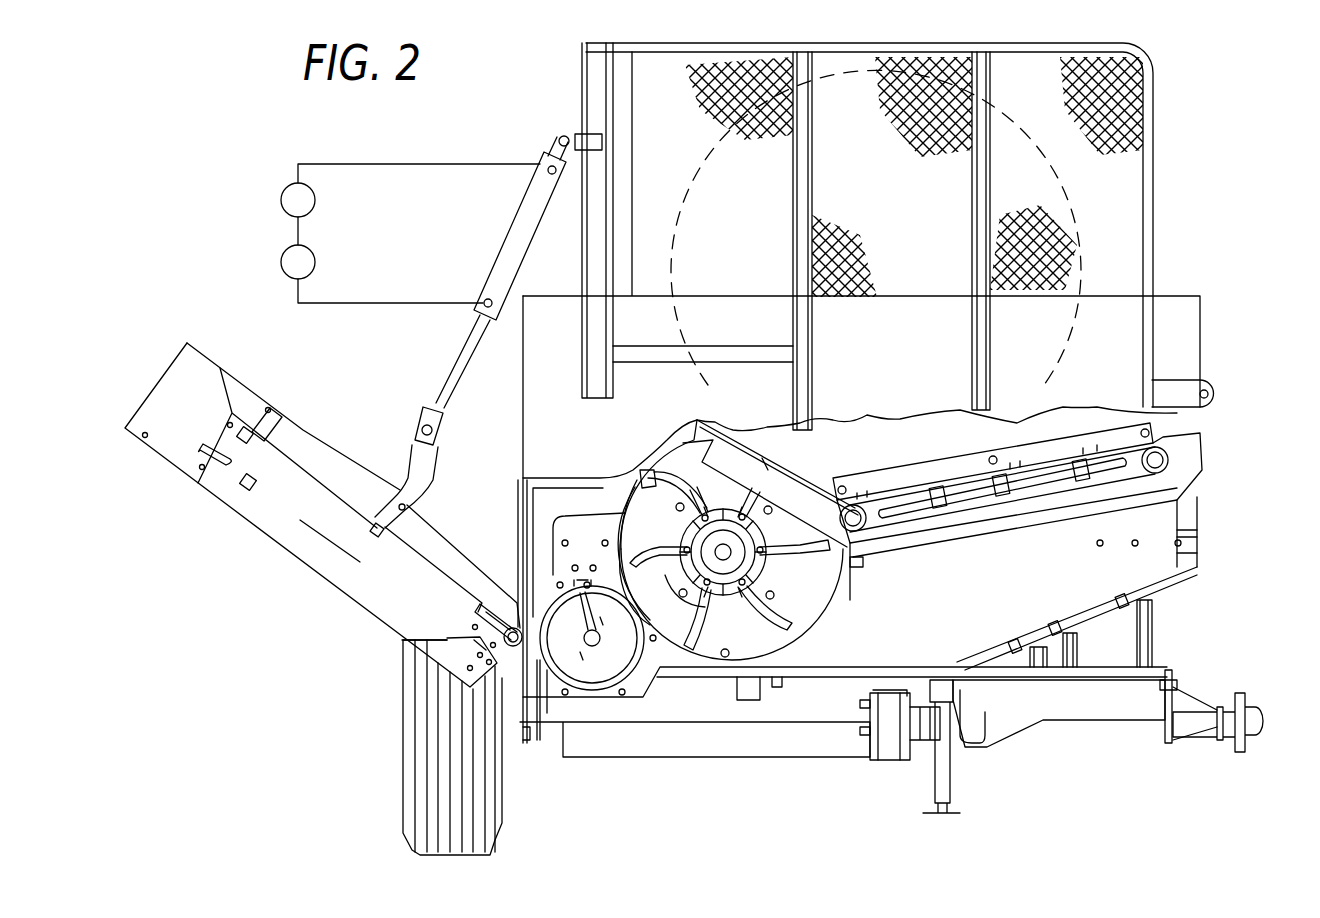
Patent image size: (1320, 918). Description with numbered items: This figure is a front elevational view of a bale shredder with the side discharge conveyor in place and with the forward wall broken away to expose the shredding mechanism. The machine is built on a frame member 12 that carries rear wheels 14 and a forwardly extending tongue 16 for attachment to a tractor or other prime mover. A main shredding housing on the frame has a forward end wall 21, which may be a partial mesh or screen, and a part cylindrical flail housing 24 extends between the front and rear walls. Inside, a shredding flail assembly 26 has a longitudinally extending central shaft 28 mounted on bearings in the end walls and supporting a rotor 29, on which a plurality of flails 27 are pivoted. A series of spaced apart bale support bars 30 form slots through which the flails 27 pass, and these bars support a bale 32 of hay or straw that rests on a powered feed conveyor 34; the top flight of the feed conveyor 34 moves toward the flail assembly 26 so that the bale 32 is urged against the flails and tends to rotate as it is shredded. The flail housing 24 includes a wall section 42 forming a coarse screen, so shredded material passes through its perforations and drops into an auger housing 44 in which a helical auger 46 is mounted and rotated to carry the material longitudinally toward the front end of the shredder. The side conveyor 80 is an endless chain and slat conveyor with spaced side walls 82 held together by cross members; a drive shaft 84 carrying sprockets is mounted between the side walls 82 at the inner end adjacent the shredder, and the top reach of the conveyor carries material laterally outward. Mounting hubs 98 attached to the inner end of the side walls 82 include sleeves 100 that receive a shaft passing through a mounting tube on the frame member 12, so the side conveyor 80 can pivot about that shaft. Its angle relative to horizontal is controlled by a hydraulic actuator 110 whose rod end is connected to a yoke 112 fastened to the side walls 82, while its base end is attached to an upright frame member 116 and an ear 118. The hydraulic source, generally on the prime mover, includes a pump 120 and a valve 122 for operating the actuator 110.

The frame member 12 is at (732, 742).
The rear wheels 14 is at (418, 797).
The tongue 16 is at (870, 740).
The forward end wall 21 is at (1105, 355).
The flail housing 24 is at (703, 647).
The shredding flail assembly 26 is at (732, 495).
The flails 27 is at (623, 510).
The central shaft 28 is at (737, 553).
The rotor 29 is at (698, 611).
The bale support bars 30 is at (777, 500).
The bale 32 is at (1017, 432).
The feed conveyor 34 is at (1022, 505).
The wall section 42 is at (635, 493).
The auger housing 44 is at (533, 543).
The helical auger 46 is at (588, 668).
The side conveyor 80 is at (285, 530).
The side walls 82 is at (333, 566).
The drive shaft 84 is at (402, 639).
The mounting hubs 98 is at (478, 605).
The sleeves 100 is at (472, 626).
The hydraulic actuator 110 is at (513, 243).
The yoke 112 is at (380, 522).
The upright frame member 116 is at (598, 95).
The ear 118 is at (583, 143).
The pump 120 is at (282, 260).
The valve 122 is at (282, 198).